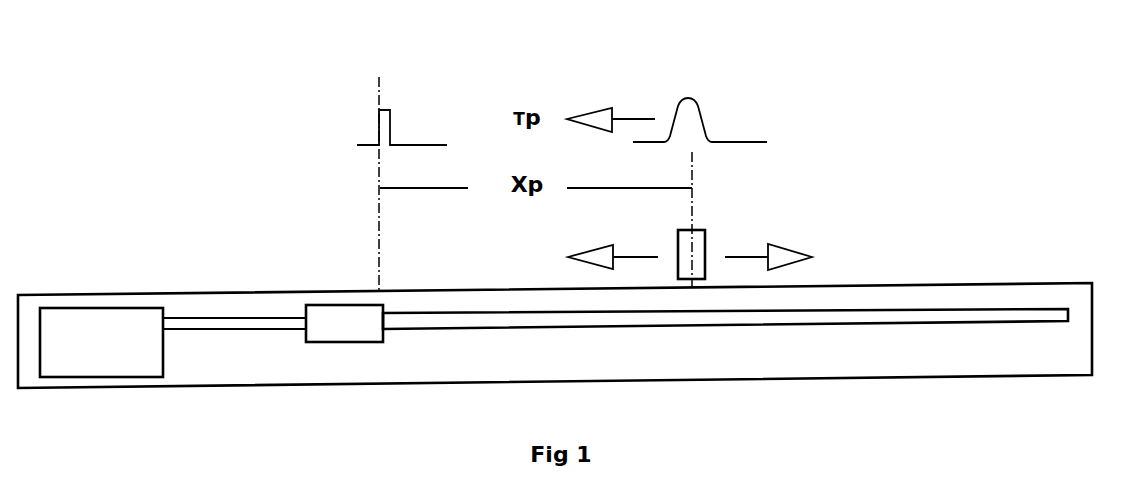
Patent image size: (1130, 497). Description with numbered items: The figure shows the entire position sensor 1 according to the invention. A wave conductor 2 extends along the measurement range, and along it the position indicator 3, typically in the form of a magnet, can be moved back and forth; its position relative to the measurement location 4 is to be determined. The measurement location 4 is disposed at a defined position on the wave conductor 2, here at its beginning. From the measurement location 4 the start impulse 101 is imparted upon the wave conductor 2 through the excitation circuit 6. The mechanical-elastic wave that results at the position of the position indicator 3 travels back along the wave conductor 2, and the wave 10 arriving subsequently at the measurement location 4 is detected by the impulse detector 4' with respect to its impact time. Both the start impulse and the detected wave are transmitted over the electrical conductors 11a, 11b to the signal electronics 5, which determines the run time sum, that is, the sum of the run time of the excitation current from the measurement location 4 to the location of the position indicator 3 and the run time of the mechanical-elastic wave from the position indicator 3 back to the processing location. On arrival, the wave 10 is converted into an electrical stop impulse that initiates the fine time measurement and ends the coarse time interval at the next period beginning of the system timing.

The position sensor 1 is at (158, 224).
The wave conductor 2 is at (900, 308).
The position indicator 3 is at (713, 230).
The measurement location 4 is at (373, 168).
The impulse detector 4' is at (344, 323).
The signal electronics 5 is at (101, 342).
The excitation circuit 6 is at (101, 342).
The wave 10 is at (690, 92).
The start impulse 101 is at (392, 110).
The electrical conductor 11a is at (187, 317).
The electrical conductor 11b is at (252, 328).